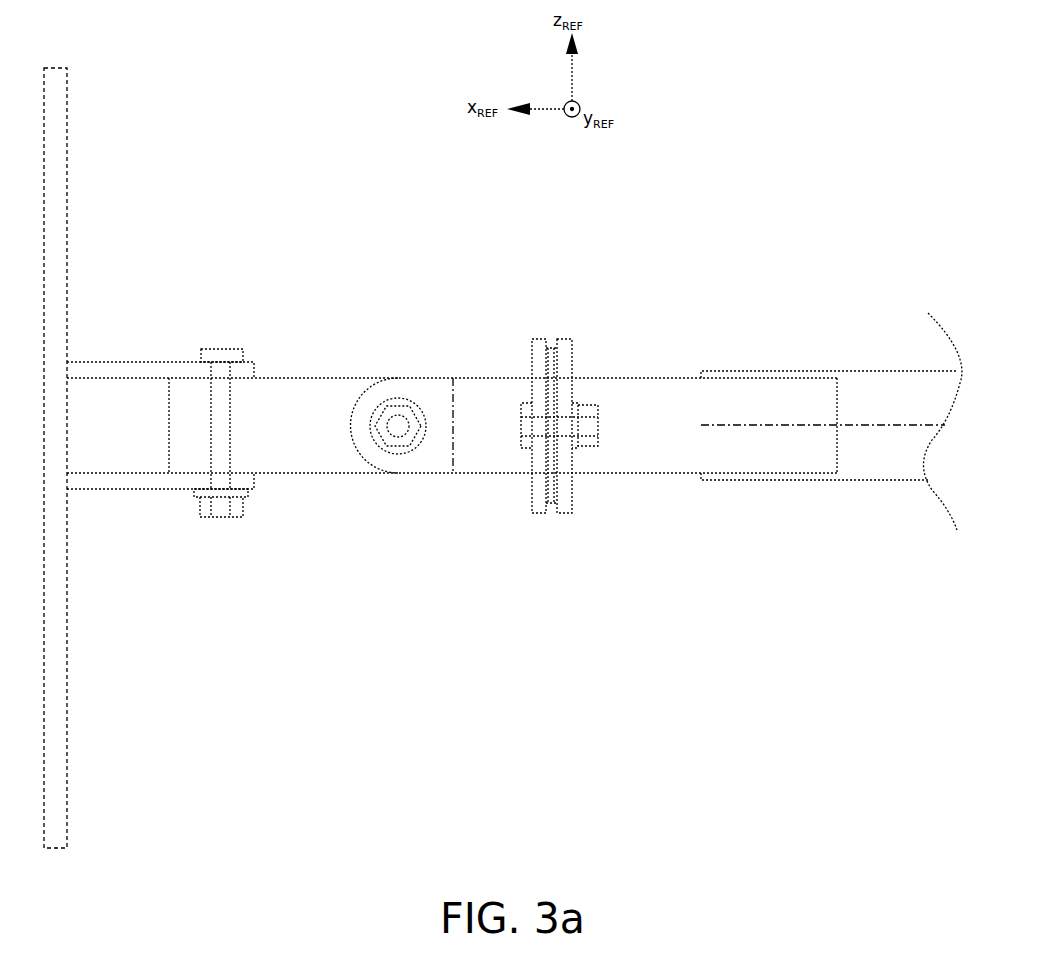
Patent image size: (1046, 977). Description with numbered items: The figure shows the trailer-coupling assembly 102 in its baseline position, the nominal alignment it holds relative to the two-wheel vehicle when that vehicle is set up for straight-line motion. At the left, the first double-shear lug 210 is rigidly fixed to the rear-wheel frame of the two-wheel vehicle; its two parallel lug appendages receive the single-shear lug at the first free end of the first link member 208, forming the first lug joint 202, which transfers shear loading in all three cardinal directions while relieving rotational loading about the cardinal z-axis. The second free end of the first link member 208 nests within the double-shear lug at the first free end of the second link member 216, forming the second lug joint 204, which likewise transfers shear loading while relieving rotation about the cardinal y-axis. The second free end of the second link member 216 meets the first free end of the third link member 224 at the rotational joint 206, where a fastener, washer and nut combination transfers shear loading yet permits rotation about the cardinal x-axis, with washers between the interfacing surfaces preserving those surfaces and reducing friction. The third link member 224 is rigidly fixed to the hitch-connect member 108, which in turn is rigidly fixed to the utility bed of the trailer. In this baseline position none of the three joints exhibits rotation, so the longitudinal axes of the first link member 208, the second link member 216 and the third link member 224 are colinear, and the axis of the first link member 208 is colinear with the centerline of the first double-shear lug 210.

The trailer-coupling assembly 102 is at (810, 88).
The hitch-connect member 108 is at (790, 371).
The first lug joint 202 is at (228, 530).
The second lug joint 204 is at (408, 440).
The rotational joint 206 is at (606, 448).
The first link member 208 is at (310, 378).
The first double-shear lug 210 is at (185, 362).
The second link member 216 is at (478, 378).
The third link member 224 is at (638, 380).